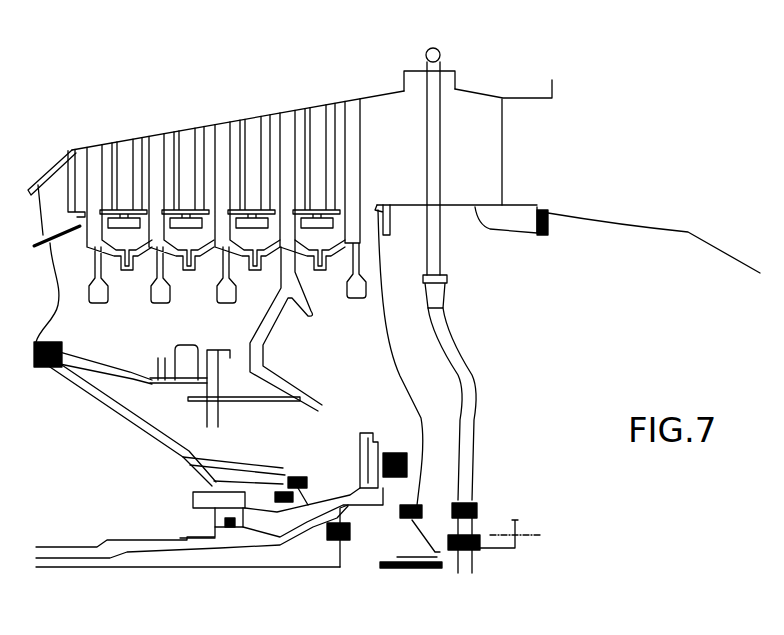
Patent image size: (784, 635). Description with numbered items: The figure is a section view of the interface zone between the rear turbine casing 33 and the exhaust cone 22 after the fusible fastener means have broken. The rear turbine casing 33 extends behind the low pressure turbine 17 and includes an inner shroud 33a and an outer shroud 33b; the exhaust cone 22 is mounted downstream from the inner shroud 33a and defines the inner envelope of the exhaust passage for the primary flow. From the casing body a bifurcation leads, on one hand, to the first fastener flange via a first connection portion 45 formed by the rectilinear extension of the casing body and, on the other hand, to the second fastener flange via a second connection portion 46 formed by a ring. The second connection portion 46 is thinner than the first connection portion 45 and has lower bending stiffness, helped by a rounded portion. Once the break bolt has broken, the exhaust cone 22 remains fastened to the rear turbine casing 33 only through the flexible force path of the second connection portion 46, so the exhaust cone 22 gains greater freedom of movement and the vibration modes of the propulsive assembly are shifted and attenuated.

The low pressure turbine 17 is at (246, 75).
The rear turbine casing 33 is at (488, 92).
The inner shroud 33a is at (452, 200).
The outer shroud 33b is at (475, 97).
The first connection portion 45 is at (525, 203).
The second connection portion 46 is at (525, 235).
The exhaust cone 22 is at (700, 230).